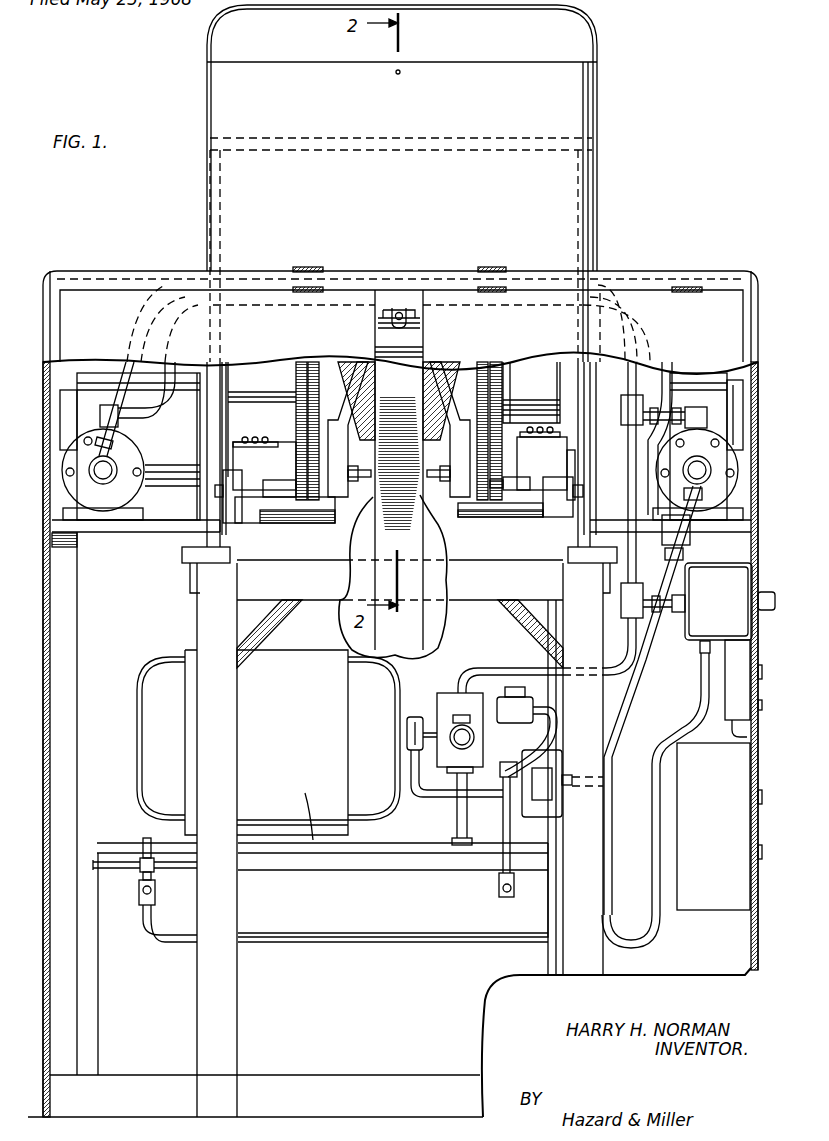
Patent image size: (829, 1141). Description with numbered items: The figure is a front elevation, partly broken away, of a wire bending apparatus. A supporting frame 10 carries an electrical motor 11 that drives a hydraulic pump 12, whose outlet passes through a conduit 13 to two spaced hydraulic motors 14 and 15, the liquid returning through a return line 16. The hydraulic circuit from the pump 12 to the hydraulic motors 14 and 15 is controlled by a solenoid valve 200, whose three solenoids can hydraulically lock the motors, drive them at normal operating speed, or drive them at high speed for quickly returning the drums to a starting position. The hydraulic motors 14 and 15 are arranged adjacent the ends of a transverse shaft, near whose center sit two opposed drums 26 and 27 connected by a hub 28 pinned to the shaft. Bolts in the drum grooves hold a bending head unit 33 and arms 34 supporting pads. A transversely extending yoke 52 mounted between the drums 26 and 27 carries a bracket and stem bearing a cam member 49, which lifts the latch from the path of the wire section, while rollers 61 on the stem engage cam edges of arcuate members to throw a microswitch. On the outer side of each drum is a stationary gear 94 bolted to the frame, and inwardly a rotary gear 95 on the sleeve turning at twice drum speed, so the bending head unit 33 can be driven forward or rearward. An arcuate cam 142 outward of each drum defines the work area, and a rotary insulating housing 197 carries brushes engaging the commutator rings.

The supporting frame 10 is at (205, 623).
The electrical motor 11 is at (268, 745).
The hydraulic pump 12 is at (443, 703).
The conduit 13 is at (508, 664).
The hydraulic motor 14 is at (735, 463).
The hydraulic motor 15 is at (134, 460).
The return line 16 is at (668, 396).
The drum 26 is at (451, 383).
The drum 27 is at (348, 376).
The hub 28 is at (400, 362).
The bending head unit 33 is at (320, 527).
The arm 34 is at (460, 472).
The cam member 49 is at (398, 308).
The yoke 52 is at (424, 333).
The roller 61 is at (384, 316).
The stationary gear 94 is at (301, 363).
The rotary gear 95 is at (313, 363).
The arcuate cam 142 is at (225, 372).
The rotary insulating housing 197 is at (533, 382).
The solenoid valve 200 is at (700, 624).